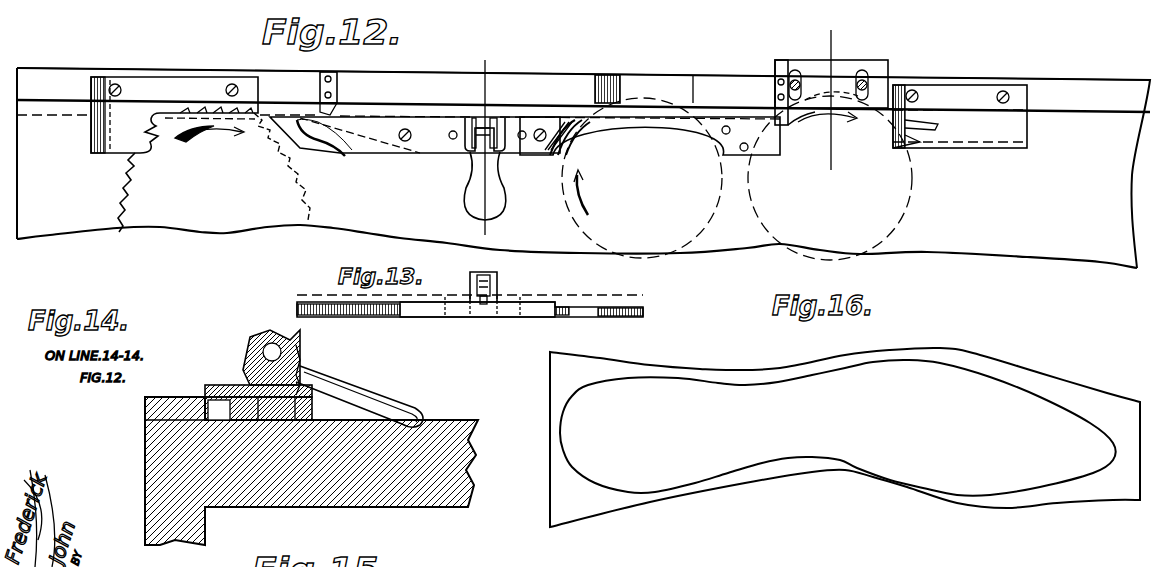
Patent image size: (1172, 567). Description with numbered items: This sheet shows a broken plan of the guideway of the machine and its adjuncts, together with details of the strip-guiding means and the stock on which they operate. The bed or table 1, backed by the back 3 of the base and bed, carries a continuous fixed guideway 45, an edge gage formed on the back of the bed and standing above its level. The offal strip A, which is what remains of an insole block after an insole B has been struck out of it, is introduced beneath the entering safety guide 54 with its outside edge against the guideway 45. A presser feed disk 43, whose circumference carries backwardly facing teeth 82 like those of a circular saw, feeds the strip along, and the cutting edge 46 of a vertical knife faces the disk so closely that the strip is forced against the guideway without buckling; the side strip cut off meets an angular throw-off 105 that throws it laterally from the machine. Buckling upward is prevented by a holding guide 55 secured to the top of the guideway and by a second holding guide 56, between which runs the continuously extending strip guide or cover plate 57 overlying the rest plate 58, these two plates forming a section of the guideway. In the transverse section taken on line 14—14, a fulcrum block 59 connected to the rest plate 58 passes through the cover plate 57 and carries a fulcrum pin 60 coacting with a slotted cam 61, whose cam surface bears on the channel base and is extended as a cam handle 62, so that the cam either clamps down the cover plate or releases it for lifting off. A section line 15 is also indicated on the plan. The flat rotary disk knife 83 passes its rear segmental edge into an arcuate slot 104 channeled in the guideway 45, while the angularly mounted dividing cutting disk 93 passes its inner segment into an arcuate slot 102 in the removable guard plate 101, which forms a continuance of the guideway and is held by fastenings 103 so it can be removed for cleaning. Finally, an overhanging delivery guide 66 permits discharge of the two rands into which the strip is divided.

In FIG. 12, the bed or table 1 is at (1078, 204).
In FIG. 14, the bed or table 1 is at (440, 428).
In FIG. 14, the back of the base and bed 3 is at (223, 527).
In FIG. 12, the section line 14— 14 is at (488, 140).
In FIG. 12, the section line 15- 15 is at (839, 105).
In FIG. 12, the presser feed disk 43 is at (118, 190).
In FIG. 12, the guideway 45 is at (58, 62).
In FIG. 14, the guideway 45 is at (165, 405).
In FIG. 12, the cutting edge 46 is at (282, 113).
In FIG. 12, the entering safety guide 54 is at (108, 127).
In FIG. 12, the holding guide 55 is at (333, 100).
In FIG. 12, the second holding guide 56 is at (773, 110).
In FIG. 12, the strip guide cover plate 57 is at (432, 142).
In FIG. 13, the strip guide cover plate 57 is at (332, 297).
In FIG. 14, the strip guide cover plate 57 is at (210, 388).
In FIG. 12, the rest plate 58 is at (610, 138).
In FIG. 13, the rest plate 58 is at (412, 306).
In FIG. 14, the rest plate 58 is at (228, 415).
In FIG. 12, the fulcrum block 59 is at (468, 148).
In FIG. 13, the fulcrum block 59 is at (490, 302).
In FIG. 14, the fulcrum block 59 is at (283, 344).
In FIG. 12, the fulcrum pin 60 is at (500, 160).
In FIG. 13, the fulcrum pin 60 is at (483, 278).
In FIG. 14, the fulcrum pin 60 is at (258, 335).
In FIG. 14, the slotted cam 61 is at (306, 358).
In FIG. 12, the cam handle 62 is at (472, 196).
In FIG. 14, the cam handle 62 is at (385, 397).
In FIG. 12, the overhanging delivery guide 66 is at (975, 95).
In FIG. 12, the teeth 82 is at (308, 188).
In FIG. 12, the rotary disk knife 83 is at (715, 235).
In FIG. 12, the dividing cutting disk 93 is at (938, 200).
In FIG. 12, the removable guard plate 101 is at (852, 64).
In FIG. 12, the arcuate slot 102 is at (820, 86).
In FIG. 12, the fastenings 103 is at (786, 76).
In FIG. 12, the arcuate slot 104 is at (618, 88).
In FIG. 12, the angular throw-off 105 is at (356, 150).
In FIG. 16, the offal strip A is at (845, 431).
In FIG. 16, the insole B is at (838, 428).